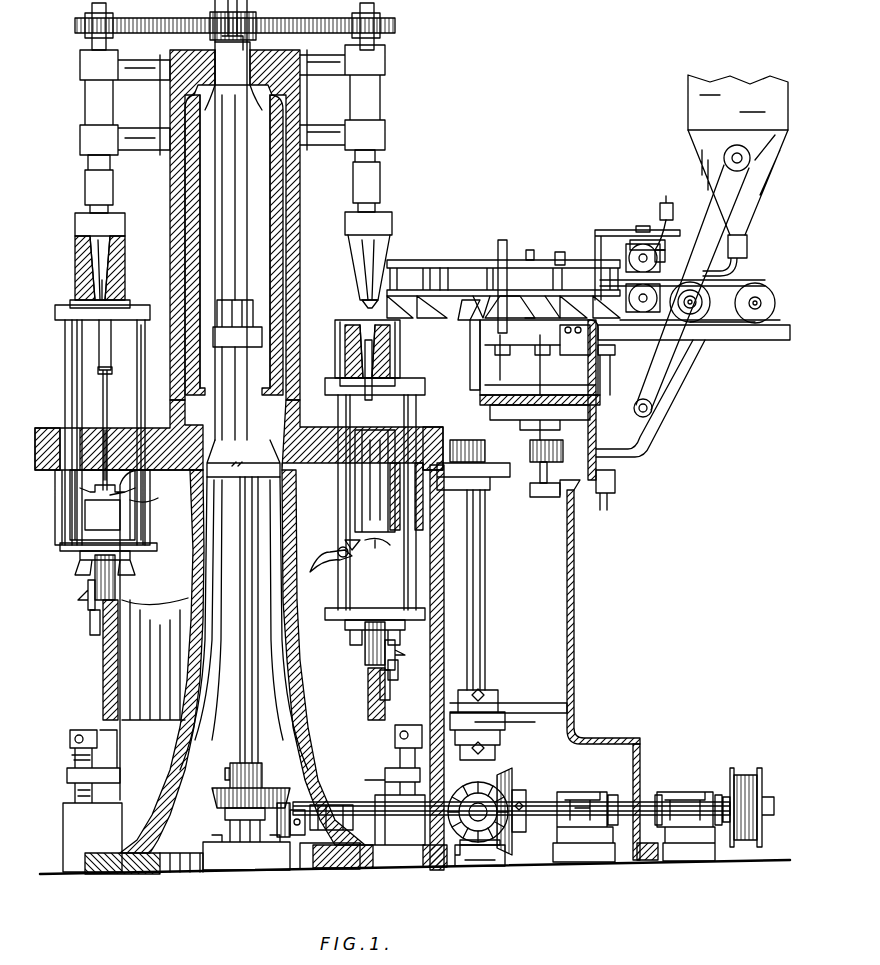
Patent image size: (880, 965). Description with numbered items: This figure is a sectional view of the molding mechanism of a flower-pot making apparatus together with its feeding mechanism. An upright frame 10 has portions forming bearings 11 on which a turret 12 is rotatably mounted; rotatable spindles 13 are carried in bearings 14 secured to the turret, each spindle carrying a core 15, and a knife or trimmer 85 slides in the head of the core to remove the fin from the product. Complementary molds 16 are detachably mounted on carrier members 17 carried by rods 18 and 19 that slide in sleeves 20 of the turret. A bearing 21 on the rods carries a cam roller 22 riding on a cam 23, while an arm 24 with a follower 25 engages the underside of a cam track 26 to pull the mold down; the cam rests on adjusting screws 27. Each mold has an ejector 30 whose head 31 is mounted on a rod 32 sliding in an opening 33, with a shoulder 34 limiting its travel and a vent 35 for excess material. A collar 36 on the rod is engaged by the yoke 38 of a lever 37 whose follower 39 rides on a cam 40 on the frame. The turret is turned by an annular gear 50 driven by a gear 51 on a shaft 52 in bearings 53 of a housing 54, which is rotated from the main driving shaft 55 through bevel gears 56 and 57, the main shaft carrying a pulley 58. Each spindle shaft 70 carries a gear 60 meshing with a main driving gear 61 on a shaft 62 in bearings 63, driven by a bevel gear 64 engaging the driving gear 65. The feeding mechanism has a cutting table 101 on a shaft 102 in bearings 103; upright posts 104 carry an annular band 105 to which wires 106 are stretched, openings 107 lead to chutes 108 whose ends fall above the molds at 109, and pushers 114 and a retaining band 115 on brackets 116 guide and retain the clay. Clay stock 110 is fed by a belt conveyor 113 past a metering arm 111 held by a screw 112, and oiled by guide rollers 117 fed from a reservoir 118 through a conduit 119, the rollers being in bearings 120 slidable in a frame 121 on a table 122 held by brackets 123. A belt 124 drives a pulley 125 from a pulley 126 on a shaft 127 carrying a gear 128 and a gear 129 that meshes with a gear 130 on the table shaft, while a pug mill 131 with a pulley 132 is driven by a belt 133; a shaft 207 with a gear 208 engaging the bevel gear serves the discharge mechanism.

The upright frame 10 is at (196, 556).
The bearings 11 is at (300, 96).
The turret 12 is at (290, 205).
The rotatable spindles 13 is at (88, 185).
The bearings 14 is at (80, 62).
The core 15 is at (392, 232).
The complementary molds 16 is at (390, 350).
The carrier members 17 is at (58, 316).
The rods 18 is at (142, 395).
The rods 19 is at (64, 395).
The sleeves 20 is at (345, 470).
The bearing 21 is at (68, 562).
The cam roller 22 is at (118, 598).
The cam 23 is at (102, 662).
The arm 24 is at (88, 596).
The follower 25 is at (100, 635).
The cam track 26 is at (396, 665).
The adjusting screws 27 is at (72, 728).
The ejector 30 is at (120, 300).
The head 31 is at (75, 294).
The rod 32 is at (70, 335).
The opening 33 is at (104, 428).
The shoulder 34 is at (98, 375).
The vent 35 is at (370, 338).
The collar 36 is at (80, 488).
The lever 37 is at (335, 562).
The yoke 38 is at (102, 505).
The follower 39 is at (312, 572).
The cam 40 is at (150, 505).
The annular gear 50 is at (40, 452).
The gear 51 is at (487, 445).
The shaft 52 is at (490, 562).
The bearings 53 is at (496, 688).
The housing 54 is at (575, 610).
The main driving shaft 55 is at (540, 810).
The bevel gear 56 is at (522, 785).
The bevel gear 57 is at (506, 775).
The pulley 58 is at (735, 772).
The gear 60 is at (78, 25).
The main driving gear 61 is at (270, 22).
The shaft 62 is at (222, 8).
The bearings 63 is at (228, 834).
The bevel gear 64 is at (222, 788).
The driving gear 65 is at (285, 803).
The spindle shaft 70 is at (84, 40).
The knife or trimmer 85 is at (76, 238).
The cutting table 101 is at (502, 250).
The shaft 102 is at (500, 265).
The bearings 103 is at (488, 378).
The upright posts 104 is at (410, 268).
The annular band 105 is at (530, 258).
The wires 106 is at (448, 260).
The openings 107 is at (528, 292).
The chutes 108 is at (462, 325).
The chute discharge position 109 is at (440, 318).
The clay stock 110 is at (744, 262).
The metering arm 111 is at (594, 230).
The screw 112 is at (642, 230).
The belt conveyor 113 is at (745, 283).
The pushers 114 is at (548, 262).
The annular retaining band 115 is at (362, 288).
The brackets 116 is at (470, 335).
The guide rollers 117 is at (662, 250).
The reservoir 118 is at (668, 200).
The conduit 119 is at (672, 225).
The bearings 120 is at (672, 278).
The frame 121 is at (640, 240).
The table 122 is at (768, 342).
The brackets 123 is at (614, 350).
The belt 124 is at (696, 352).
The pulley 125 is at (698, 300).
The pulley 126 is at (630, 408).
The shaft 127 is at (540, 410).
The gear 128 is at (525, 470).
The gear 129 is at (571, 345).
The gear 130 is at (522, 346).
The pug mill 131 is at (750, 202).
The pulley 132 is at (765, 148).
The belt 133 is at (718, 166).
The shaft 207 is at (455, 860).
The gear 208 is at (472, 858).